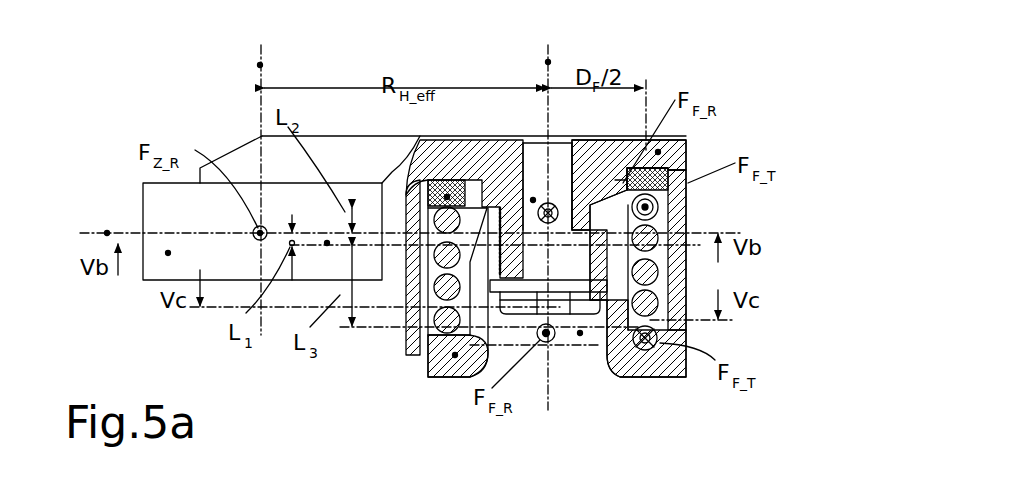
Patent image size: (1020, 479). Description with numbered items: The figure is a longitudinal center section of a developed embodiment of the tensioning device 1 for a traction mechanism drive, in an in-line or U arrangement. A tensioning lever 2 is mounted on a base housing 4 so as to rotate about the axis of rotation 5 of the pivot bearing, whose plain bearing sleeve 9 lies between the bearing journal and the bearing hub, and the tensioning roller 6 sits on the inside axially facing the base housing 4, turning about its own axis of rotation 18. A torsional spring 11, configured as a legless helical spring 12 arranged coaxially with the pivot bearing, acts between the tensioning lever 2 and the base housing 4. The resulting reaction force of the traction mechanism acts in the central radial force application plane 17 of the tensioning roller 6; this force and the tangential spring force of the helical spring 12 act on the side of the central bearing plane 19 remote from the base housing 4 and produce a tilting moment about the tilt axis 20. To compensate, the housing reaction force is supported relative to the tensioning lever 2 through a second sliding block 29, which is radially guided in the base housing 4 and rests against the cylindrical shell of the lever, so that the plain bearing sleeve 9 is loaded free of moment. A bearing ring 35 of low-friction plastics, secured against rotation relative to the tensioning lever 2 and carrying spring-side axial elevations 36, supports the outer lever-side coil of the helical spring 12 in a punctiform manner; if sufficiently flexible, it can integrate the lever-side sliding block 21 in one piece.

The tensioning device 1 is at (121, 79).
The tensioning lever 2 is at (658, 152).
The base housing 4 is at (455, 355).
The axis of rotation 5 is at (546, 62).
The tensioning roller 6 is at (168, 253).
The plain bearing sleeve 9 is at (660, 274).
The torsional spring 11 is at (713, 195).
The helical spring 12 is at (670, 222).
The central radial force application plane 17 is at (107, 233).
The axis of rotation 18 is at (258, 65).
The central bearing plane 19 is at (283, 314).
The tilt axis 20 is at (327, 244).
The lever-side sliding block 21 is at (533, 200).
The second sliding block 29 is at (580, 334).
The bearing ring 35 is at (471, 152).
The axial elevations 36 is at (448, 196).